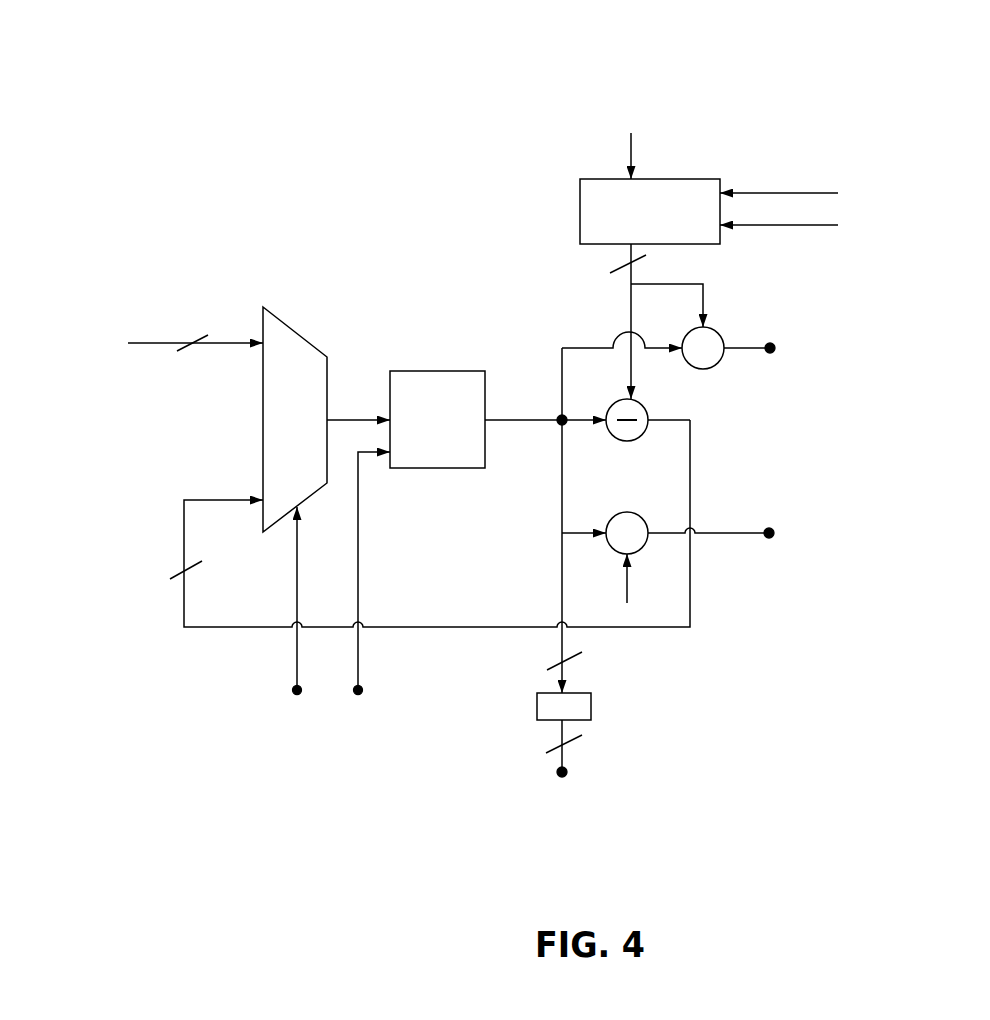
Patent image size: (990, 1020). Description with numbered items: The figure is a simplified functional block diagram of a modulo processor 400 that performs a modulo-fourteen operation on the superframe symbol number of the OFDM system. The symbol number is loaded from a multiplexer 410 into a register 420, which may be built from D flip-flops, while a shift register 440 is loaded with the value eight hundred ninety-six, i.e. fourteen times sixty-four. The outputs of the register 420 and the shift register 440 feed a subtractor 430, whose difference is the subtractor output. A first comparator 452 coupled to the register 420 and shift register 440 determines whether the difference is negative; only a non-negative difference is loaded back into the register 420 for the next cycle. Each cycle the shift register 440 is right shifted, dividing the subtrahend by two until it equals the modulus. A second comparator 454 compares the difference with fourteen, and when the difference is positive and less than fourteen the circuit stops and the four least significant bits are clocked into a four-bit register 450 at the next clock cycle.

The modulo processor 400 is at (178, 81).
The multiplexer 410 is at (301, 299).
The register 420 is at (426, 355).
The subtractor 430 is at (648, 405).
The shift register 440 is at (722, 185).
The 4-bit register 450 is at (592, 698).
The first comparator 452 is at (720, 337).
The second comparator 454 is at (630, 510).